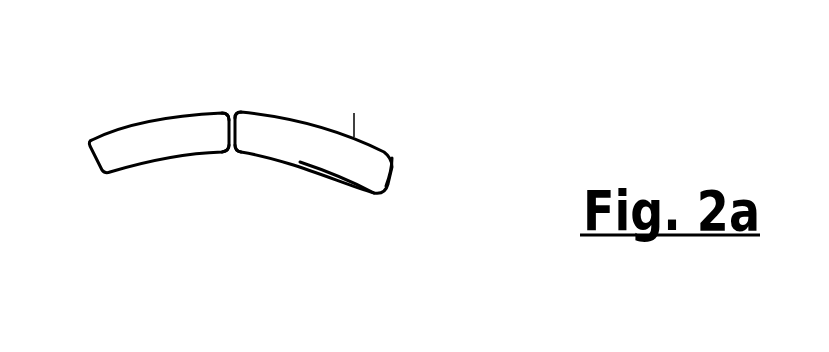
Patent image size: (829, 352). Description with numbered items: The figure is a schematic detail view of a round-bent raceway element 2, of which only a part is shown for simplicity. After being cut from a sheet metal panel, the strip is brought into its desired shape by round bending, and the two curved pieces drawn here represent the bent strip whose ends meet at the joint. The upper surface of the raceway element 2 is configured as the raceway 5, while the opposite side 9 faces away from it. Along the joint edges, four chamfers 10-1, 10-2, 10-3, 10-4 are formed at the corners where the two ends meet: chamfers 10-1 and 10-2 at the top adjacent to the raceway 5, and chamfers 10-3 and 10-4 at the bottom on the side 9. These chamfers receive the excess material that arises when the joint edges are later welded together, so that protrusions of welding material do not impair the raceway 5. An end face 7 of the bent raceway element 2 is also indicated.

The raceway element 2 is at (378, 67).
The raceway 5 is at (355, 135).
The end face 7 is at (375, 170).
The side opposite the raceway 9 is at (343, 177).
The chamfer 10-1 is at (223, 103).
The chamfer 10-2 is at (248, 102).
The chamfer 10-3 is at (235, 153).
The chamfer 10-4 is at (227, 153).